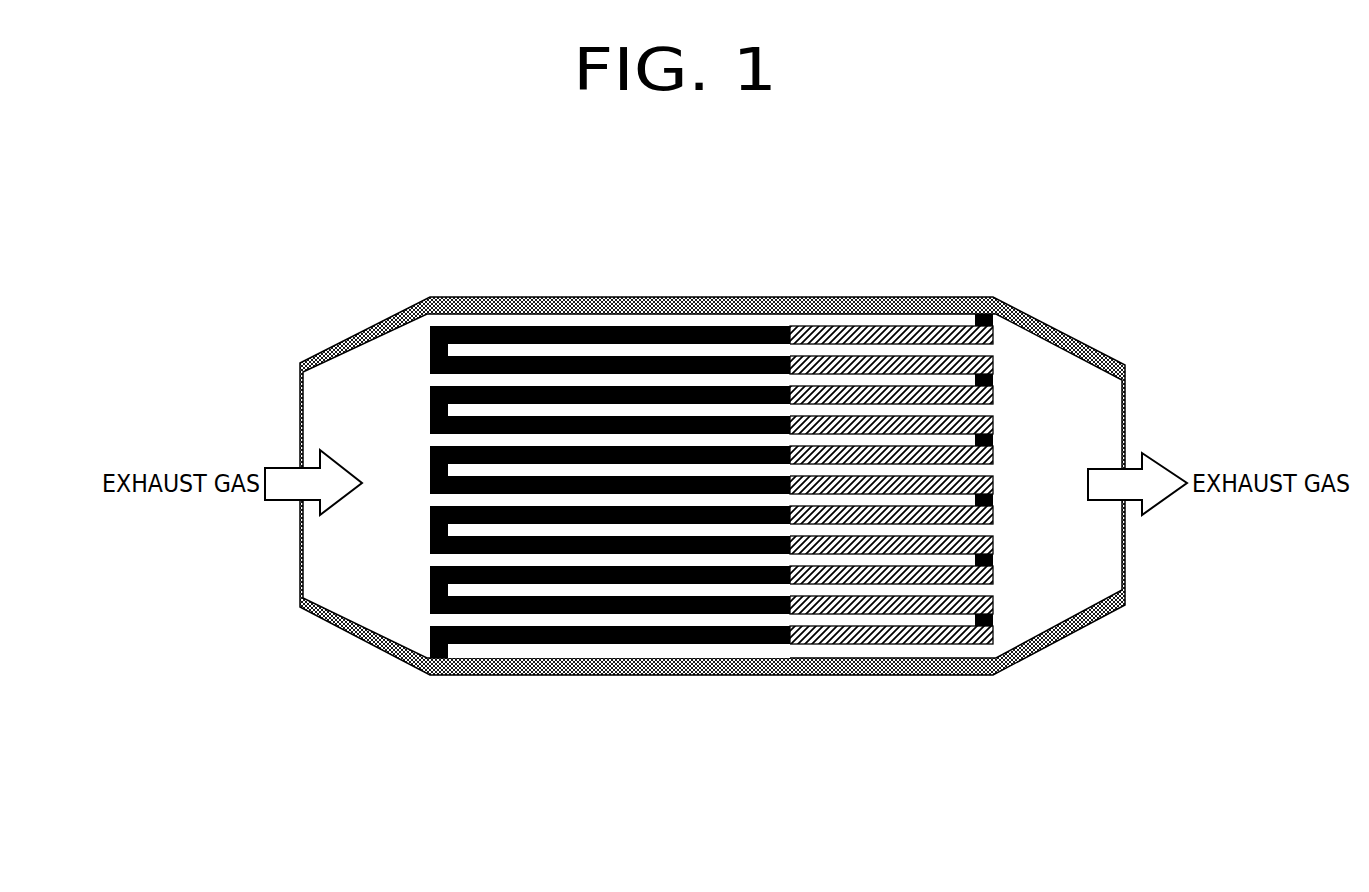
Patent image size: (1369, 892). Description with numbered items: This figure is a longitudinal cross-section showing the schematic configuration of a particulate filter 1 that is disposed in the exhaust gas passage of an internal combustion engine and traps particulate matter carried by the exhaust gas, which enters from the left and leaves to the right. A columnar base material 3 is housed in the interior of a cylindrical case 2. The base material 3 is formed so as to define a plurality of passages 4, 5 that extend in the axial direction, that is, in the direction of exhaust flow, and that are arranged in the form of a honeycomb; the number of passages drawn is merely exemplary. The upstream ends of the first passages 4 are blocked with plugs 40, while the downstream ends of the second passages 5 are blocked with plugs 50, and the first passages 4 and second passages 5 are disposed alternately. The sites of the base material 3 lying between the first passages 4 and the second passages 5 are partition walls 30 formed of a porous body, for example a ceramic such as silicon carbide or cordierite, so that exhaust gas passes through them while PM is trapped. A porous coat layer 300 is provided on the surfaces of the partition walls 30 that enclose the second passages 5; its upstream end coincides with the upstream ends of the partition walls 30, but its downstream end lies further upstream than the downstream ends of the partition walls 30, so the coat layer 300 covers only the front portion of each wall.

The particulate filter 1 is at (688, 492).
The cylindrical case 2 is at (1040, 319).
The base material 3 is at (997, 506).
The first passages 4 is at (992, 411).
The second passages 5 is at (431, 563).
The partition walls 30 is at (905, 641).
The plugs 40 is at (433, 351).
The plugs 50 is at (993, 560).
The coat layer 300 is at (732, 492).